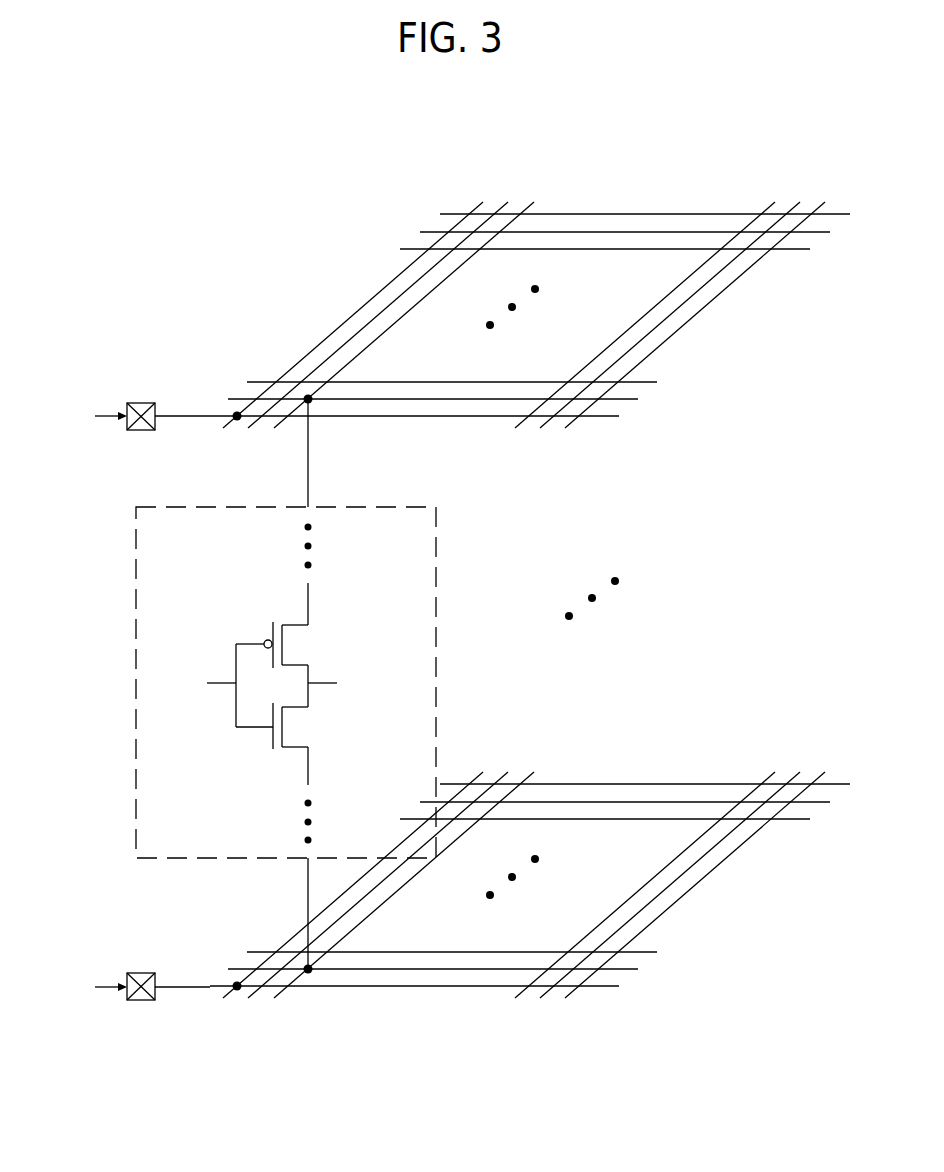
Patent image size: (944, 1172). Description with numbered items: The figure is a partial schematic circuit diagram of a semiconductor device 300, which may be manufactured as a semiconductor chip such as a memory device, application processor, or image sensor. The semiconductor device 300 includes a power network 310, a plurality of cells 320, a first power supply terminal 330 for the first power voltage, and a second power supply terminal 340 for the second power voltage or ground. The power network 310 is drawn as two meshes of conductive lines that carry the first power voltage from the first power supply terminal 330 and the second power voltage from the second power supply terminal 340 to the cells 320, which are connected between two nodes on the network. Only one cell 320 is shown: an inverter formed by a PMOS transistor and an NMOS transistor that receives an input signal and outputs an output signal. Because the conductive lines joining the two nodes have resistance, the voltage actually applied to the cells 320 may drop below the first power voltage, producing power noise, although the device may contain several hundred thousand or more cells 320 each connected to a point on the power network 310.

The semiconductor device 300 is at (733, 152).
The power network 310 is at (640, 214).
The cell 320 is at (436, 591).
The first power supply terminal 330 is at (143, 403).
The second power supply terminal 340 is at (143, 973).